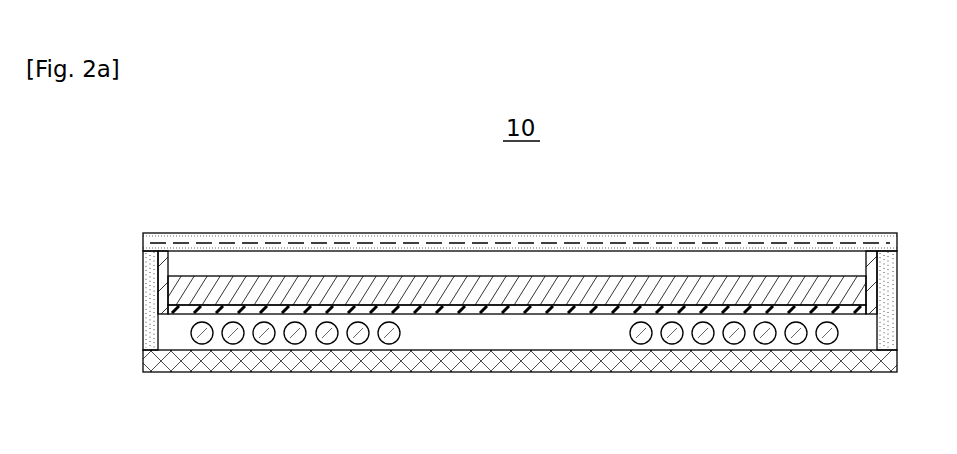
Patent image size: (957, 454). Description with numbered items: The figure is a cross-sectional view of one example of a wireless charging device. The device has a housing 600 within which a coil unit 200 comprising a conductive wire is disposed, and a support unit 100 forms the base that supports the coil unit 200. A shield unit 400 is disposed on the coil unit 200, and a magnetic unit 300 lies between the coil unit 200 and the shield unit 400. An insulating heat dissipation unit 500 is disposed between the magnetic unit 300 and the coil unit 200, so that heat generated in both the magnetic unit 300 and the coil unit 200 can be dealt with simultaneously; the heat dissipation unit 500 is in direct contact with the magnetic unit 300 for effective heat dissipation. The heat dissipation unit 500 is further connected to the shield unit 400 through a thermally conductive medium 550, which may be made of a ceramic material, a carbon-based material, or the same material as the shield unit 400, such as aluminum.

The support unit 100 is at (466, 358).
The coil unit 200 is at (295, 340).
The magnetic unit 300 is at (437, 285).
The shield unit 400 is at (528, 243).
The heat dissipation unit 500 is at (266, 306).
The thermally conductive medium 550 is at (868, 258).
The housing 600 is at (152, 250).